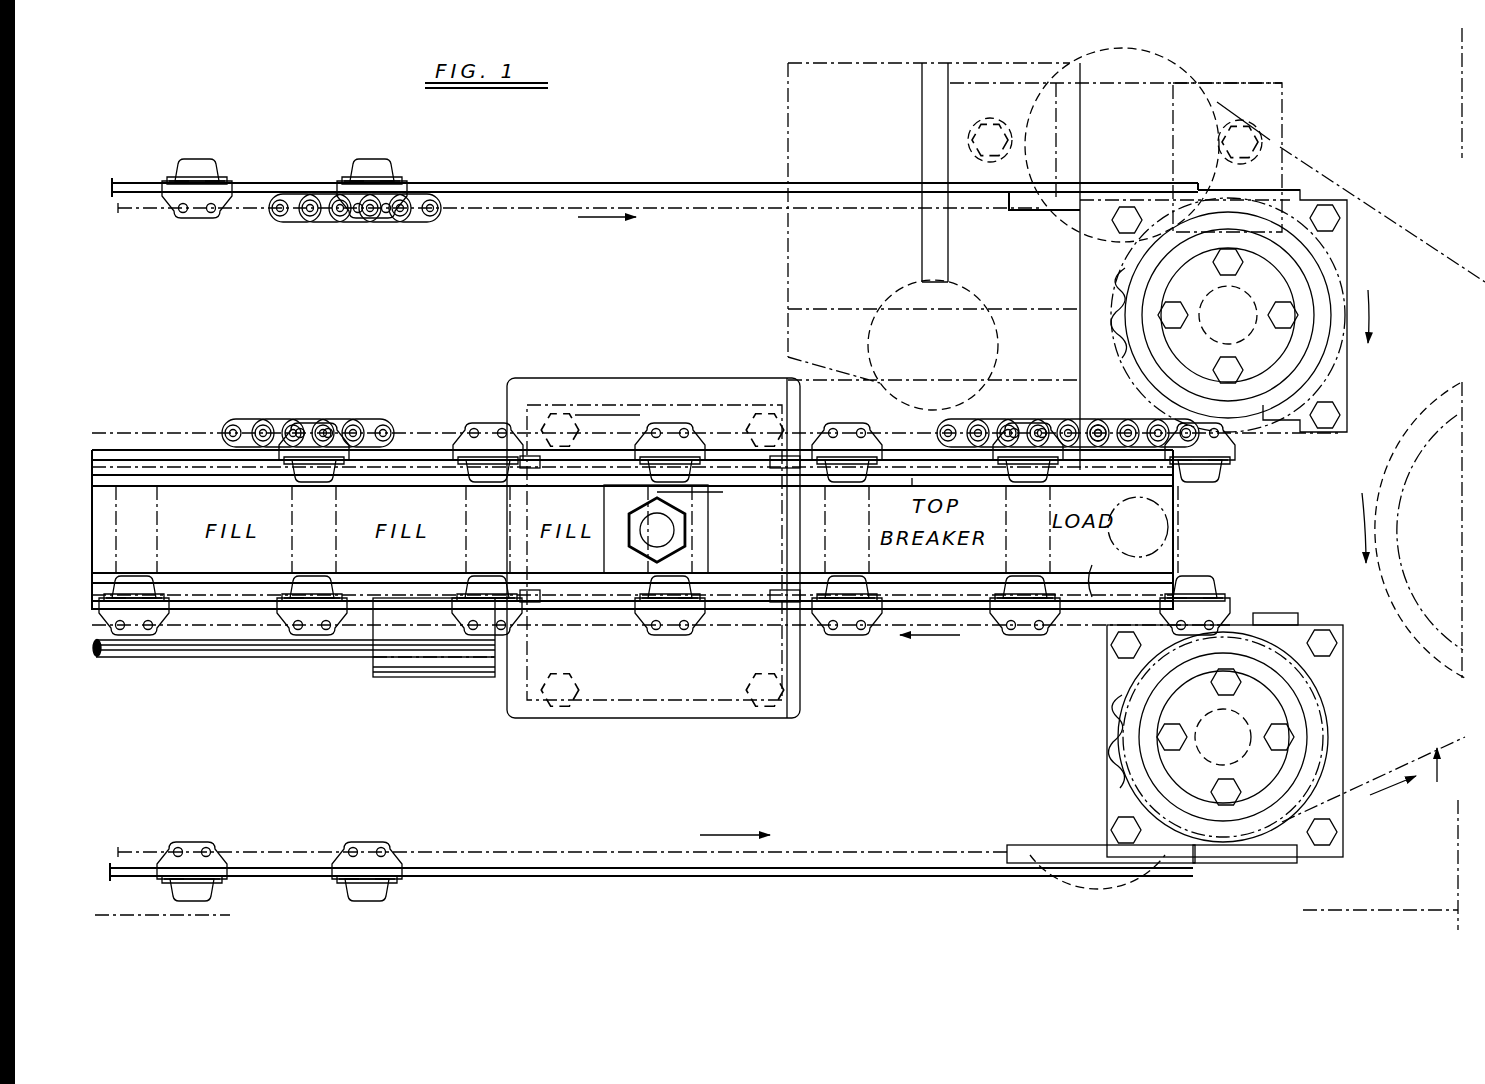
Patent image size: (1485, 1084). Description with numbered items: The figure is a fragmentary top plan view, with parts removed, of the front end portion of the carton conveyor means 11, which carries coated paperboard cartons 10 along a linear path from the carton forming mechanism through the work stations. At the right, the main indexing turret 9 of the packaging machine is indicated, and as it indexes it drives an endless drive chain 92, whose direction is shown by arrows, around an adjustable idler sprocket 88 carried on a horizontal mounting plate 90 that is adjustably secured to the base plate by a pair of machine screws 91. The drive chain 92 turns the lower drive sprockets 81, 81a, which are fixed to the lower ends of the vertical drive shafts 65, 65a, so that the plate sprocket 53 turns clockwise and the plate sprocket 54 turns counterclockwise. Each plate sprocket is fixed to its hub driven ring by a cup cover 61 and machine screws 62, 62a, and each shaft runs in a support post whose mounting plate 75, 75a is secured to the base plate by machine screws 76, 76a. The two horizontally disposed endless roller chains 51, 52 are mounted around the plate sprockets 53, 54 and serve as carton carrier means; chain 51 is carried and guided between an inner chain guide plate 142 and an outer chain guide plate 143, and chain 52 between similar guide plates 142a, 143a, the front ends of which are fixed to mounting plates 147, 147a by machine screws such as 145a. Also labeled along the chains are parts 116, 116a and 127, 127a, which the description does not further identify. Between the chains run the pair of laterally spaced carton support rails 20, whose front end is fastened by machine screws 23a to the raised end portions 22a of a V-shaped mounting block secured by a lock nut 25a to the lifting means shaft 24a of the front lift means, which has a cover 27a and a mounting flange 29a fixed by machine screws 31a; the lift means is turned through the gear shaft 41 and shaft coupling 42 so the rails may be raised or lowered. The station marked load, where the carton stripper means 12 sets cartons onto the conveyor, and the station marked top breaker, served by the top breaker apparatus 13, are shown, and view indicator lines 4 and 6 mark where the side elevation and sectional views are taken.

The section line 4- 4 is at (103, 914).
The section line 6- 6 is at (1455, 40).
The main indexing turret 9 is at (1415, 407).
The cartons 10 is at (333, 518).
The carton conveyor means 11 is at (1351, 352).
The carton stripper means 12 is at (1108, 502).
The carton top breaker apparatus 13 is at (968, 290).
The carton support rails 20 is at (200, 483).
The raised end portions 22a is at (592, 504).
The machine screws 23a is at (536, 456).
The lifting means shaft 24a is at (670, 530).
The lock nut 25a is at (676, 510).
The cover 27a is at (803, 702).
The mounting plate or flange 29a is at (752, 720).
The machine screws 31a is at (561, 416).
The gear shaft 41 is at (247, 645).
The shaft coupling 42 is at (406, 669).
The conveyor roller chain 51 is at (1018, 412).
The conveyor roller chain 52 is at (983, 630).
The plate sprocket 53 is at (1108, 312).
The plate sprocket 54 is at (1110, 745).
The cup cover 61 is at (1290, 296).
The machine screws 62 is at (1282, 306).
The machine screws 62a is at (1277, 726).
The drive shaft 65 is at (1220, 292).
The drive shaft 65a is at (1214, 722).
The mounting plate 75 is at (1352, 257).
The mounting plate 75a is at (1345, 684).
The machine screws 76 is at (1332, 221).
The machine screws 76a is at (1330, 644).
The drive sprocket 81 is at (1152, 270).
The drive sprocket 81a is at (1138, 757).
The idler sprocket 88 is at (1196, 104).
The mounting plate 90 is at (1262, 90).
The machine screws 91 is at (960, 148).
The drive chain 92 is at (1314, 163).
The carrier clamp 116 is at (205, 221).
The carrier clamp 116a is at (143, 637).
The clamp cap 127 is at (203, 157).
The clamp cap 127a is at (156, 588).
The inner chain guide plate 142 is at (912, 481).
The chain guide plate 142a is at (1085, 571).
The outer chain guide plate 143 is at (700, 173).
The chain guide plate 143a is at (649, 877).
The machine screw 145a is at (1135, 892).
The mounting plate 147 is at (1305, 197).
The mounting plate 147a is at (1267, 855).